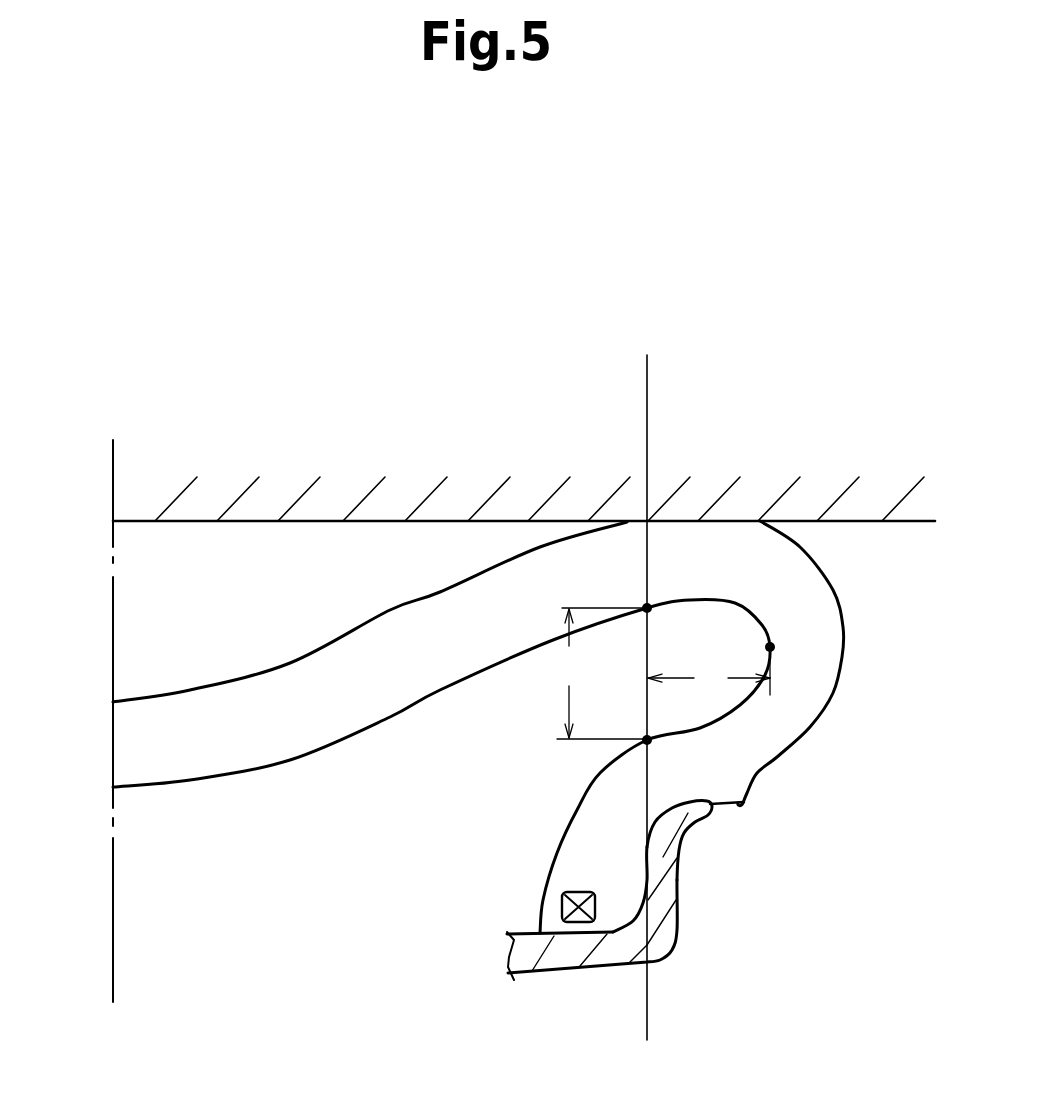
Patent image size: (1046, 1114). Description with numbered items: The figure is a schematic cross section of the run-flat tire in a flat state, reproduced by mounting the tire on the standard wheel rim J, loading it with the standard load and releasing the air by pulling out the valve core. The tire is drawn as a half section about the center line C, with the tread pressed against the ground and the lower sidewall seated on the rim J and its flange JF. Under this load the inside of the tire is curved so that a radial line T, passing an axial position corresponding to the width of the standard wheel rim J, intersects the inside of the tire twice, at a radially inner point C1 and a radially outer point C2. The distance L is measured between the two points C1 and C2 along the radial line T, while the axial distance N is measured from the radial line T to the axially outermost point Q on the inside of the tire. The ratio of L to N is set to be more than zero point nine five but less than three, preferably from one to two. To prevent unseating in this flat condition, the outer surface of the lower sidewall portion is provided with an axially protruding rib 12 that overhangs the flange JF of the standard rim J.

The axially protruding rib 12 is at (752, 803).
The standard wheel rim J is at (686, 918).
The flange of the standard rim JF is at (665, 856).
The radially inner point C1 is at (650, 741).
The radially outer point C2 is at (650, 609).
The axially outermost point on the inside of the tire Q is at (772, 647).
The radial line T is at (648, 386).
The tire equatorial center line C is at (113, 703).
The distance between the two points C1 and C2 L is at (602, 673).
The axial distance from the radial line to the axially outermost point N is at (709, 673).